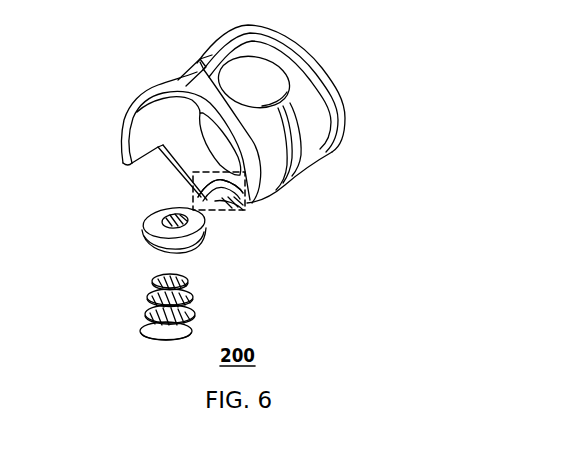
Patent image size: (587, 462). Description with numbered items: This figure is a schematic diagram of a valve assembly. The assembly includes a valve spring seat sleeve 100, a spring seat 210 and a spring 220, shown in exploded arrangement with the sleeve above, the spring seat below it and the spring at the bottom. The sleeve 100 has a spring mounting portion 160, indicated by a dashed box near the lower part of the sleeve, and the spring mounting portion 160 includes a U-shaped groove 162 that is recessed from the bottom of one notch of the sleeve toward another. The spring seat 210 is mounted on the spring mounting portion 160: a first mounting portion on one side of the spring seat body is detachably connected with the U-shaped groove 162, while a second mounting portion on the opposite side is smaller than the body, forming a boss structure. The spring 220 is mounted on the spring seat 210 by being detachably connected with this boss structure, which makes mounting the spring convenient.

The valve spring seat sleeve 100 is at (308, 113).
The spring mounting portion 160 is at (223, 212).
The U-shaped groove 162 is at (220, 188).
The spring seat 210 is at (163, 232).
The spring 220 is at (138, 326).